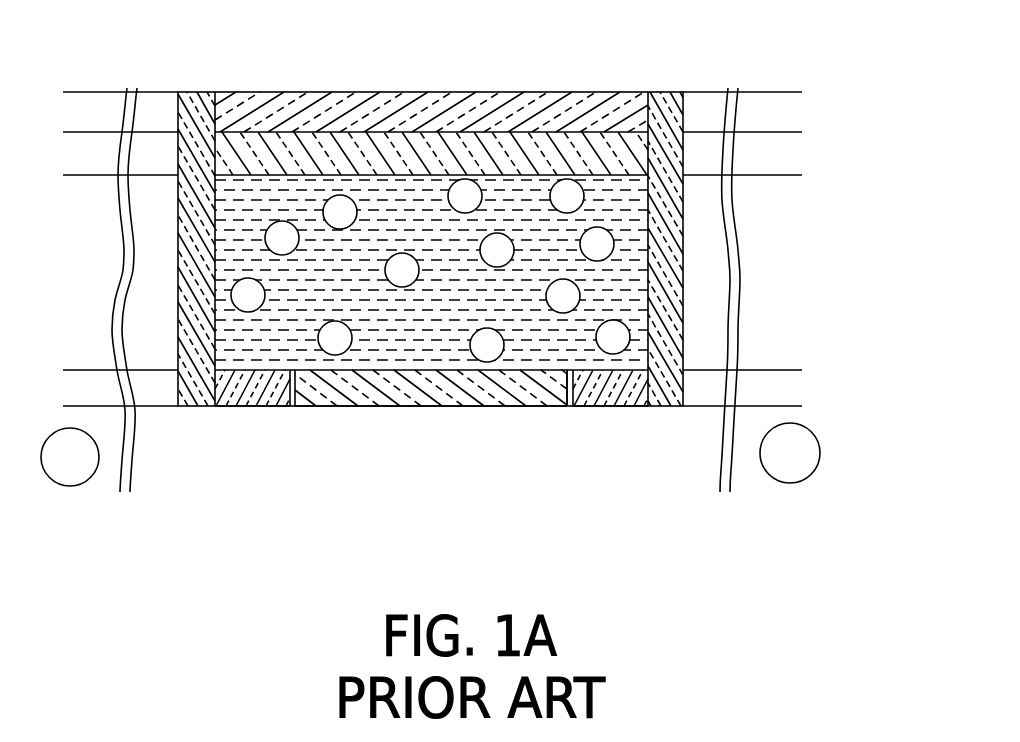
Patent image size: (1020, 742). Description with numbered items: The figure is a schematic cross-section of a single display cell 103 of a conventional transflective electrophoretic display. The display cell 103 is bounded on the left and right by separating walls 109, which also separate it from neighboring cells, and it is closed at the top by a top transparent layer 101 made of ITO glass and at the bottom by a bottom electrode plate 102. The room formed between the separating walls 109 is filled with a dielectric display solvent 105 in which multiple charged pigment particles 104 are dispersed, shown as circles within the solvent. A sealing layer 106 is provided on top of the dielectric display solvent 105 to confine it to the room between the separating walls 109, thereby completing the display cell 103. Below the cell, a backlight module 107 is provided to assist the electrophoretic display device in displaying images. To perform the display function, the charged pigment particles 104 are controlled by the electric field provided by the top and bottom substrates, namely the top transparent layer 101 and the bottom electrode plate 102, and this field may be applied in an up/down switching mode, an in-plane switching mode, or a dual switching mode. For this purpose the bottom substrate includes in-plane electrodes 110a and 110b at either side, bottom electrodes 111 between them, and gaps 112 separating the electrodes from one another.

The top transparent layer 101 is at (783, 113).
The bottom electrode plate 102 is at (783, 390).
The display cell 103 is at (222, 78).
The charged pigment particles 104 is at (250, 293).
The dielectric display solvent 105 is at (420, 192).
The sealing layer 106 is at (362, 137).
The backlight module 107 is at (70, 487).
The separating walls 109 is at (183, 325).
The in-plane electrode 110a is at (242, 407).
The in-plane electrode 110b is at (613, 407).
The bottom electrodes 111 is at (372, 407).
The gaps 112 is at (570, 407).